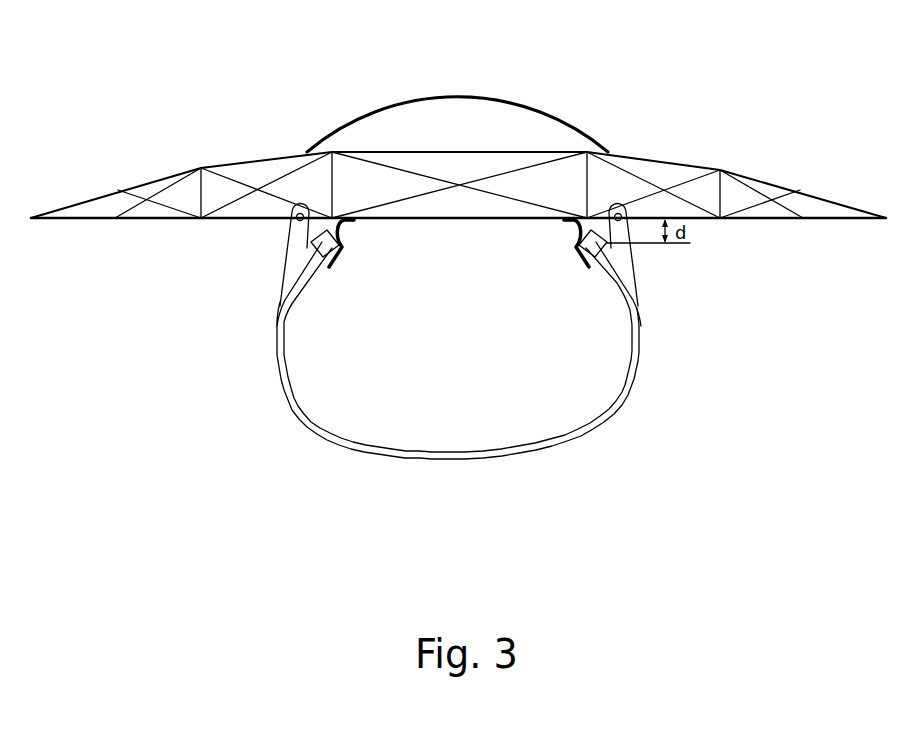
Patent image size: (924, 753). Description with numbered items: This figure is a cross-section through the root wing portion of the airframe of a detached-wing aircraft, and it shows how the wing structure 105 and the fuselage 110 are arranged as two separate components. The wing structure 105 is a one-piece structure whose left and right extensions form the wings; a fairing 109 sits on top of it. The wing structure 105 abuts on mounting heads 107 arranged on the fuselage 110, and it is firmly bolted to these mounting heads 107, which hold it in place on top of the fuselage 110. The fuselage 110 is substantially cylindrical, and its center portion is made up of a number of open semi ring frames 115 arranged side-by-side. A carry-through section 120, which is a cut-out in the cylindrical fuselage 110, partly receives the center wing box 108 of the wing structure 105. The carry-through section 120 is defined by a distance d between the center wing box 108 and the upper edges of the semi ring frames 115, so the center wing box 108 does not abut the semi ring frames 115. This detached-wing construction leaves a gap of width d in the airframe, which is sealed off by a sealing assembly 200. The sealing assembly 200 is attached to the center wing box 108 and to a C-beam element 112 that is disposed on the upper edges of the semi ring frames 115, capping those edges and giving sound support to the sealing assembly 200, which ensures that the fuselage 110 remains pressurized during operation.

The wing structure 105 is at (787, 219).
The mounting heads 107 is at (298, 251).
The center wing box 108 is at (493, 220).
The fairing 109 is at (537, 106).
The fuselage 110 is at (658, 430).
The C-beam element 112 is at (337, 263).
The semi ring frames 115 is at (634, 350).
The carry-through section 120 is at (414, 234).
The sealing assembly 200 is at (358, 252).